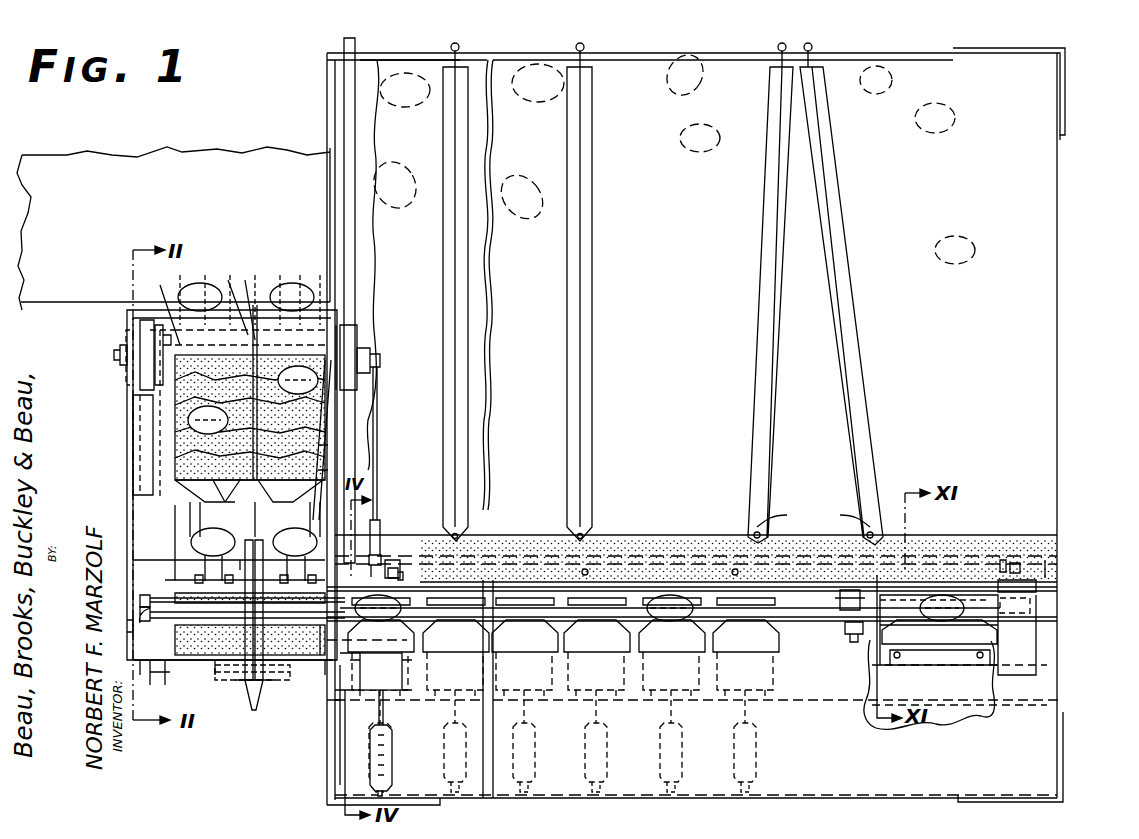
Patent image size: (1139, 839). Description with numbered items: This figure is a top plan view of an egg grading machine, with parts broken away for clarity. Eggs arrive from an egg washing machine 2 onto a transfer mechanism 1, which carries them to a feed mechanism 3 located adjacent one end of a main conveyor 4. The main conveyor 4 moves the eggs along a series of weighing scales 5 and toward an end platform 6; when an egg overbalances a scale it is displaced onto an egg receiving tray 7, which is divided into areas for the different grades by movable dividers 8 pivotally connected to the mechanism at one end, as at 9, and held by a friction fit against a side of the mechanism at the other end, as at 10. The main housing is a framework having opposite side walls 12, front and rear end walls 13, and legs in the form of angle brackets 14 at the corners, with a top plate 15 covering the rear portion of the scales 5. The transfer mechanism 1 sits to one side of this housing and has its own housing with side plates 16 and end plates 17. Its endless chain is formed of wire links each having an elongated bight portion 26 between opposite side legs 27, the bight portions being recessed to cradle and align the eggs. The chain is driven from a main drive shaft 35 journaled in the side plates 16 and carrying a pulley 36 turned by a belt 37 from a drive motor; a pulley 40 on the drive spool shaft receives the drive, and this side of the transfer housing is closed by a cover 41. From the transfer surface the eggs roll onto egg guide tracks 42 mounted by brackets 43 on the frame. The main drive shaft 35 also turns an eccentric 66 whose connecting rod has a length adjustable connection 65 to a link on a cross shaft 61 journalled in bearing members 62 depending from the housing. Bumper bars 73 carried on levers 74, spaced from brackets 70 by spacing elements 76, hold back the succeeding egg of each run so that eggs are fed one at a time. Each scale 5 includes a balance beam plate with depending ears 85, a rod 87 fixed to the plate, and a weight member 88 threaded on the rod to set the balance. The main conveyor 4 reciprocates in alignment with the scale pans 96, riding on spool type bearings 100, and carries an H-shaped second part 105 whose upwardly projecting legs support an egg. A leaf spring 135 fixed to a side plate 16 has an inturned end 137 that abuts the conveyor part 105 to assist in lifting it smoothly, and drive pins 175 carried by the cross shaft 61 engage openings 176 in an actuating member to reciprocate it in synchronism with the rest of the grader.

The transfer mechanism 1 is at (122, 430).
The egg washing machine 2 is at (50, 302).
The feed mechanism 3 is at (168, 545).
The main conveyor mechanism 4 is at (215, 628).
The weighing scales 5 is at (336, 685).
The end platform 6 is at (1020, 646).
The egg receiving tray 7 is at (1048, 441).
The movable dividers 8 is at (778, 354).
The pivotal connection 9 is at (840, 515).
The friction fit 10 is at (808, 49).
The side walls 12 is at (327, 150).
The end walls 13 is at (646, 58).
The angle brackets 14 is at (1065, 70).
The top plate 15 is at (1044, 717).
The side plates 16 is at (127, 568).
The end plates 17 is at (162, 668).
The bight portion 26 is at (313, 414).
The side legs 27 is at (322, 447).
The main drive shaft 35 is at (120, 353).
The pulley 36 is at (357, 334).
The belt 37 is at (349, 247).
The pulley 40 is at (140, 385).
The cover 41 is at (143, 444).
The egg guide tracks 42 is at (205, 520).
The brackets 43 is at (177, 573).
The cross shaft 61 is at (393, 564).
The bearing members 62 is at (377, 420).
The length adjustable connection 65 is at (381, 497).
The eccentric 66 is at (380, 360).
The brackets 70 is at (233, 670).
The bumper bars 73 is at (245, 557).
The levers 74 is at (260, 694).
The spacing elements 76 is at (245, 683).
The depending ears 85 is at (373, 671).
The rod 87 is at (382, 714).
The weight member 88 is at (387, 765).
The scale pans 96 is at (773, 589).
The spool type bearings 100 is at (848, 633).
The second conveyor part 105 is at (836, 615).
The spring 135 is at (140, 600).
The inturned end 137 is at (136, 612).
The drive pins 175 is at (395, 568).
The openings 176 is at (998, 561).